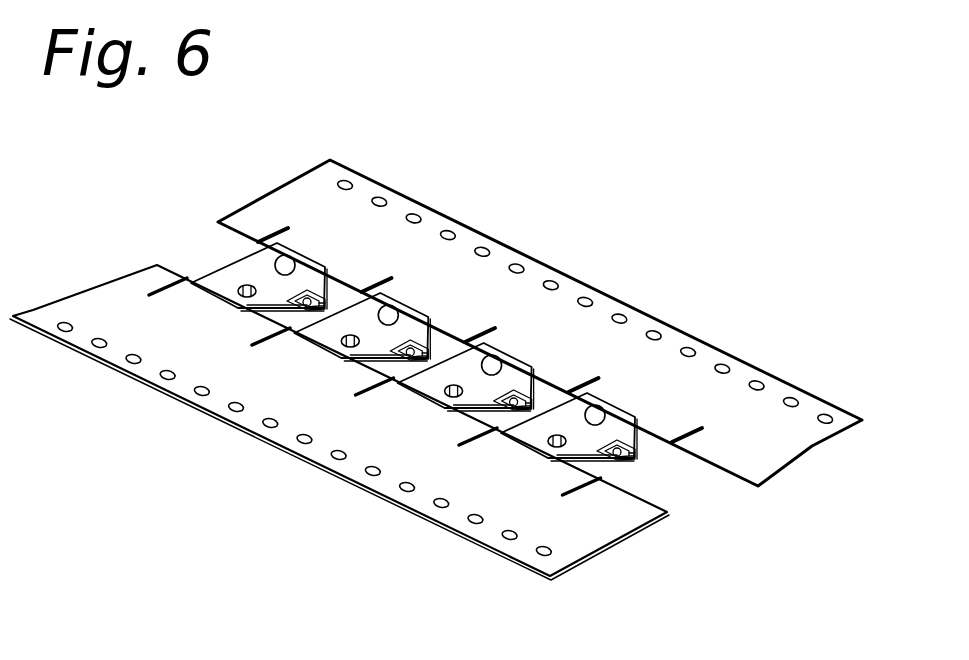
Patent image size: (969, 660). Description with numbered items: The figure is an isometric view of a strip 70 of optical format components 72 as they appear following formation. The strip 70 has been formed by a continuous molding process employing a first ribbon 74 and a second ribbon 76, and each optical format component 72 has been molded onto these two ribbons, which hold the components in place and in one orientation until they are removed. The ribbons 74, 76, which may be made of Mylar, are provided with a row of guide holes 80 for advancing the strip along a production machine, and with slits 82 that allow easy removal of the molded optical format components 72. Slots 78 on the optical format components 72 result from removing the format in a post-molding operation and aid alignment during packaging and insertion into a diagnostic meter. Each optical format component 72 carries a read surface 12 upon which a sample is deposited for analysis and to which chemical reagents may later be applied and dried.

The strip 70 is at (397, 533).
The optical format component 72 is at (308, 266).
The first ribbon 74 is at (233, 372).
The second ribbon 76 is at (455, 263).
The slot 78 is at (203, 292).
The guide hole 80 is at (338, 459).
The slit 82 is at (588, 381).
The read surface 12 is at (624, 462).